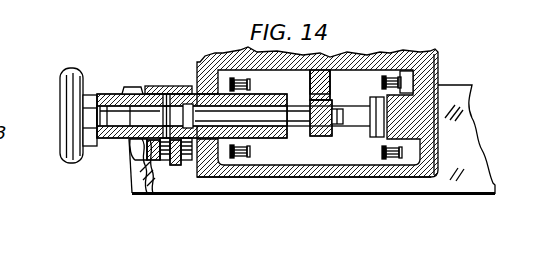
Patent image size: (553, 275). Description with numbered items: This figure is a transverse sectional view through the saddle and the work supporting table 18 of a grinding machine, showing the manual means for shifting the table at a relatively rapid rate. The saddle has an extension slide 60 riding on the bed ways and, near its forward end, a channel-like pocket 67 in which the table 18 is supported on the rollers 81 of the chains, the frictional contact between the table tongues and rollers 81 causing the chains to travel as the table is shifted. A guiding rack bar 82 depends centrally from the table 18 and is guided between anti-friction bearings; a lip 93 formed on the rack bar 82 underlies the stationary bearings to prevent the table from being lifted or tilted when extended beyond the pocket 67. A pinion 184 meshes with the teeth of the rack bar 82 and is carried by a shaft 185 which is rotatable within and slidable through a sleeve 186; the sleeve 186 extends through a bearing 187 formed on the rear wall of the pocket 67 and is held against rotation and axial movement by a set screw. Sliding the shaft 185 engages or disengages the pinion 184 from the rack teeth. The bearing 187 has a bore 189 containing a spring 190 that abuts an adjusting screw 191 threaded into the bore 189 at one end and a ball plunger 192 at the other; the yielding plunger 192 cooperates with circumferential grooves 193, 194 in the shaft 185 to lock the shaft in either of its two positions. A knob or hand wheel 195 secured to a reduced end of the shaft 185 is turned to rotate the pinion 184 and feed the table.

The work supporting table 18 is at (437, 53).
The extension slide 60 is at (476, 118).
The channel-like pocket 67 is at (204, 176).
The rollers 81 is at (250, 153).
The guiding rack bar 82 is at (322, 82).
The lip 93 is at (334, 102).
The pinion 184 is at (328, 137).
The shaft 185 is at (292, 114).
The sleeve 186 is at (108, 94).
The bearing 187 is at (169, 94).
The bore 189 is at (132, 163).
The spring 190 is at (140, 145).
The adjusting screw 191 is at (140, 193).
The ball plunger 192 is at (128, 144).
The groove 193 is at (158, 89).
The groove 194 is at (192, 95).
The knob or hand wheel 195 is at (66, 79).